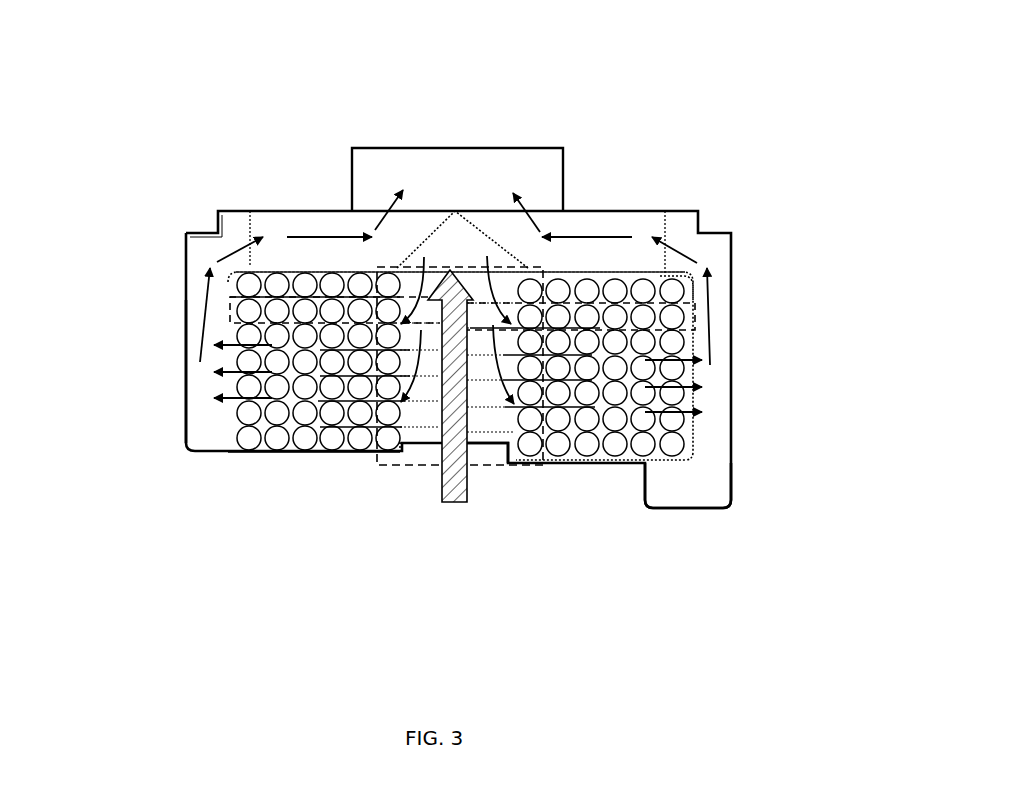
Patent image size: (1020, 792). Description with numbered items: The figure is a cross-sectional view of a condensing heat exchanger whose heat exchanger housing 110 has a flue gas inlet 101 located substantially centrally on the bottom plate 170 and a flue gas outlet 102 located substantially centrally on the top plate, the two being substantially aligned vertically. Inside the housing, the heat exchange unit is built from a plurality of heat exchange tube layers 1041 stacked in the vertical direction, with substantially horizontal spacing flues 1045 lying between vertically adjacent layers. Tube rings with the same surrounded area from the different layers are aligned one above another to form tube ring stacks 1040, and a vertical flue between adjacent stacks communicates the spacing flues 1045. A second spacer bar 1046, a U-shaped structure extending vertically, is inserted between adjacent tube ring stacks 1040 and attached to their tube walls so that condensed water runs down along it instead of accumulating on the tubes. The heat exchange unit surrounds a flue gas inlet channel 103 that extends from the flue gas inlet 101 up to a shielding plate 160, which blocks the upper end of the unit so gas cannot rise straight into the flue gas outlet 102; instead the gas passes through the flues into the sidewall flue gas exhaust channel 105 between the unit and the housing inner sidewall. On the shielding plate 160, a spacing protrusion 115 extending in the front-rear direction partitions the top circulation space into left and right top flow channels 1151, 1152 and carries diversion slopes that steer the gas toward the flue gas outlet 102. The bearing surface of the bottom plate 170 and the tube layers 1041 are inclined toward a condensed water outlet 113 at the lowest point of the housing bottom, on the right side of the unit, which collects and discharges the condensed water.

The flue gas outlet 102 is at (455, 182).
The spacing protrusion 115 is at (498, 247).
The left top flow channel 1151 is at (340, 247).
The right top flow channel 1152 is at (603, 245).
The shielding plate 160 is at (290, 258).
The second spacer bar 1046 is at (675, 282).
The heat exchanger housing 110 is at (186, 322).
The heat exchange tube layer 1041 is at (698, 330).
The spacing flue 1045 is at (683, 435).
The condensed water outlet 113 is at (693, 498).
The sidewall flue gas exhaust channel 105 is at (200, 380).
The bottom plate 170 is at (307, 463).
The flue gas inlet channel 103 is at (423, 405).
The flue gas inlet 101 is at (487, 447).
The tube ring stack 1040 is at (510, 470).